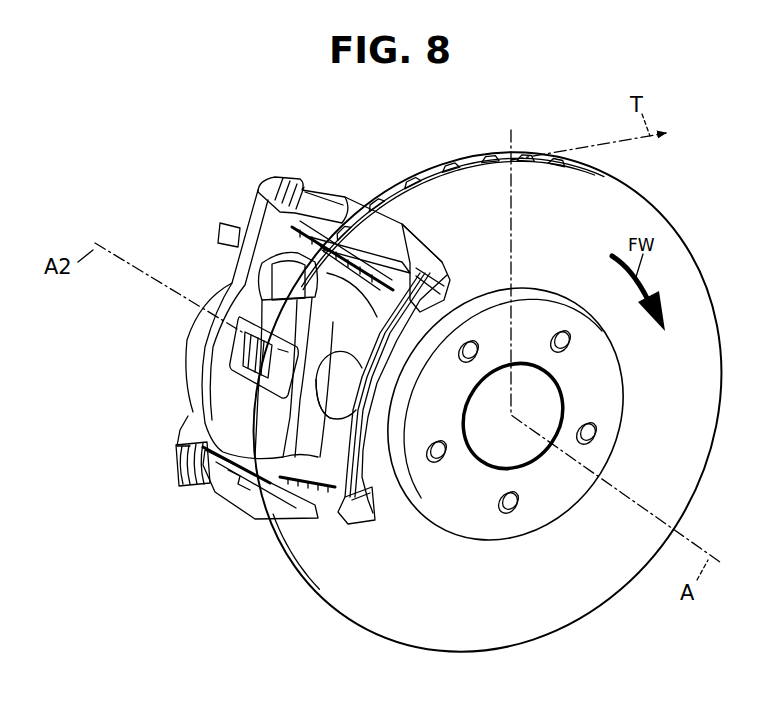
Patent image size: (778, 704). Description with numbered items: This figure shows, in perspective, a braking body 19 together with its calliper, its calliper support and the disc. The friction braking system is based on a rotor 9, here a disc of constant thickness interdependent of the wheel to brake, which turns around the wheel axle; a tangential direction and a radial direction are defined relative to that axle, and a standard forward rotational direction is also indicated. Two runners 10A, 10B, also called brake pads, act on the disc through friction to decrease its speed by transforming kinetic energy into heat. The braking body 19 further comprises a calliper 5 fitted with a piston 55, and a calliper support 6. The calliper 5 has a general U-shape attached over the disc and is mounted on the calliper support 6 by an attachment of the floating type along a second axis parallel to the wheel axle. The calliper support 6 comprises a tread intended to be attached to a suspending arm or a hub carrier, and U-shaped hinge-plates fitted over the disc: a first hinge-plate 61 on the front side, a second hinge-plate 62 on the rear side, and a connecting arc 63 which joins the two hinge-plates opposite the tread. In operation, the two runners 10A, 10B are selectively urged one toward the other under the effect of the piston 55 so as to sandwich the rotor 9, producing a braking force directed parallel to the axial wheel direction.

The braking body 19 is at (137, 168).
The runner 10A is at (277, 288).
The runner 10B is at (324, 388).
The calliper 5 is at (232, 399).
The calliper support 6 is at (186, 420).
The piston 55 is at (193, 344).
The first hinge-plate 61 is at (395, 258).
The second hinge-plate 62 is at (231, 498).
The connecting arc 63 is at (365, 479).
The rotor 9 is at (284, 569).